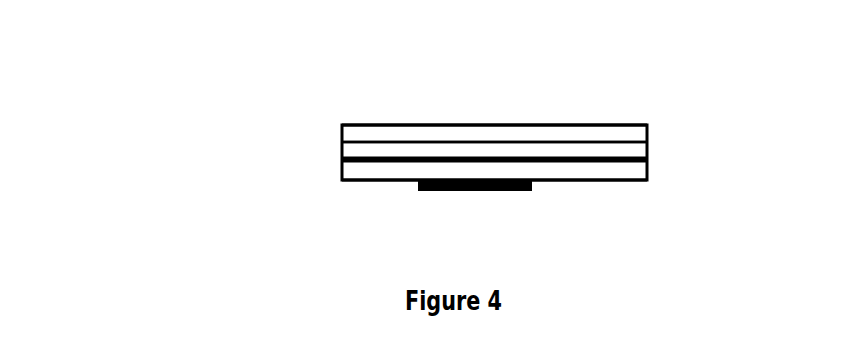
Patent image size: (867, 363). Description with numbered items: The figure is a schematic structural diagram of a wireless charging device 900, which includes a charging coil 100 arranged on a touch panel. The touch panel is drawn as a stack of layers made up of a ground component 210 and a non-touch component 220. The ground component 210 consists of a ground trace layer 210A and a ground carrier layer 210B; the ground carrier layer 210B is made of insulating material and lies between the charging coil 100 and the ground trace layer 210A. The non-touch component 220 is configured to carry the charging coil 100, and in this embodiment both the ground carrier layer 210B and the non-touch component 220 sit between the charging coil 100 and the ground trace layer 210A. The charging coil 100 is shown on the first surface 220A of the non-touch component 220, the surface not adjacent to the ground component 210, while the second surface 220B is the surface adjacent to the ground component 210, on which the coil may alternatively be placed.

The charging coil 100 is at (522, 211).
The ground component 210 is at (394, 111).
The ground trace layer 210A is at (428, 104).
The ground carrier layer 210B is at (426, 131).
The non-touch component 220 is at (492, 169).
The first surface 220A is at (431, 196).
The second surface 220B is at (556, 134).
The wireless charging device 900 is at (456, 133).